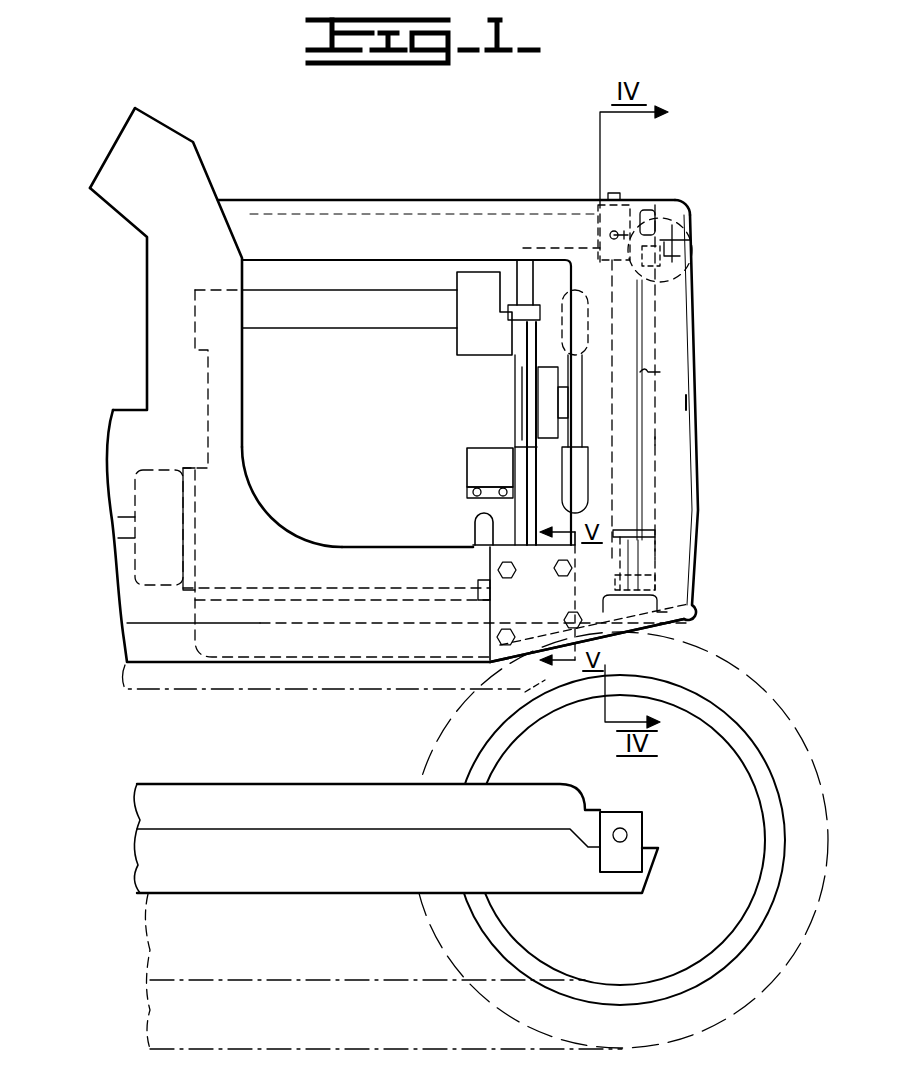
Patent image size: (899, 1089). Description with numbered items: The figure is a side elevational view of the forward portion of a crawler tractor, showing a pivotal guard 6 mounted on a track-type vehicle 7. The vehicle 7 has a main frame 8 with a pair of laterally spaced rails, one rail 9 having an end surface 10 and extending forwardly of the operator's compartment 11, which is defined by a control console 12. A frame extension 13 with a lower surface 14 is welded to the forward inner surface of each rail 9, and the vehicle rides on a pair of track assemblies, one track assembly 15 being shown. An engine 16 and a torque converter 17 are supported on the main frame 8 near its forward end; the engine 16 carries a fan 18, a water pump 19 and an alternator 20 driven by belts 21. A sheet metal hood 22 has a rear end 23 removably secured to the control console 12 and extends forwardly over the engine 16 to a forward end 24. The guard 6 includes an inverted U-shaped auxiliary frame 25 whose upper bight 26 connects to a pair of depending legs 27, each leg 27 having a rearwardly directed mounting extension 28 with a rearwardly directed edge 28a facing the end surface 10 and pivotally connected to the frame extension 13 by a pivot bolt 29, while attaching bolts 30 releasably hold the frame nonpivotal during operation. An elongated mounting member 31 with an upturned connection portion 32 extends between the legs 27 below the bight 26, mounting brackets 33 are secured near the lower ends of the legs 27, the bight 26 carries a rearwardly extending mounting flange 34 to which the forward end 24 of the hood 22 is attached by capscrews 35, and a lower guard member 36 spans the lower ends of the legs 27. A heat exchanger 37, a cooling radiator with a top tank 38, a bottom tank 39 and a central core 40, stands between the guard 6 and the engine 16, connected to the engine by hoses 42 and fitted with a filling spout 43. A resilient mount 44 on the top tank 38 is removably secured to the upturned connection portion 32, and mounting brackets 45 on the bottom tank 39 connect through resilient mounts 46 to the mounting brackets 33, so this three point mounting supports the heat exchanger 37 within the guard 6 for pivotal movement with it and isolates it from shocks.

The pivotal guard 6 is at (704, 212).
The track-type vehicle 7 is at (322, 172).
The main frame 8 is at (284, 514).
The rail 9 is at (336, 558).
The end surface 10 is at (488, 630).
The operator's compartment 11 is at (116, 326).
The control console 12 is at (160, 132).
The frame extension 13 is at (482, 670).
The lower surface 14 is at (530, 692).
The track assembly 15 is at (760, 658).
The engine 16 is at (335, 409).
The torque converter 17 is at (158, 476).
The fan 18 is at (570, 338).
The water pump 19 is at (463, 346).
The alternator 20 is at (484, 455).
The belts 21 is at (522, 505).
The hood 22 is at (453, 212).
The rear end 23 is at (237, 210).
The forward end 24 is at (636, 206).
The auxiliary frame 25 is at (708, 318).
The upper bight 26 is at (680, 228).
The depending legs 27 is at (692, 401).
The mounting extension 28 is at (513, 668).
The rearwardly directed edge 28a is at (490, 600).
The pivot bolt 29 is at (585, 628).
The attaching bolts 30 is at (514, 580).
The mounting member 31 is at (685, 257).
The upturned connection portion 32 is at (668, 206).
The mounting brackets 33 is at (670, 608).
The mounting flange 34 is at (606, 212).
The capscrews 35 is at (613, 194).
The lower guard member 36 is at (642, 628).
The heat exchanger 37 is at (655, 437).
The top tank 38 is at (690, 290).
The bottom tank 39 is at (660, 538).
The central core 40 is at (660, 372).
The hoses 42 is at (520, 294).
The filling spout 43 is at (615, 250).
The resilient mount 44 is at (634, 382).
The mounting brackets 45 is at (647, 582).
The resilient mounts 46 is at (665, 586).